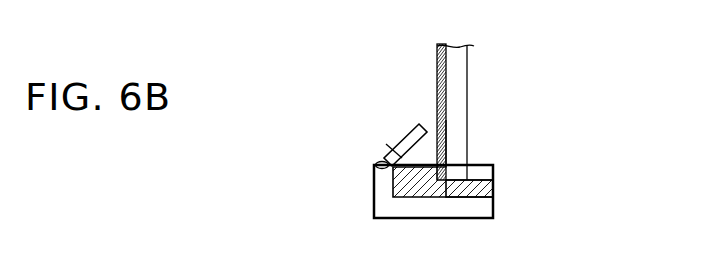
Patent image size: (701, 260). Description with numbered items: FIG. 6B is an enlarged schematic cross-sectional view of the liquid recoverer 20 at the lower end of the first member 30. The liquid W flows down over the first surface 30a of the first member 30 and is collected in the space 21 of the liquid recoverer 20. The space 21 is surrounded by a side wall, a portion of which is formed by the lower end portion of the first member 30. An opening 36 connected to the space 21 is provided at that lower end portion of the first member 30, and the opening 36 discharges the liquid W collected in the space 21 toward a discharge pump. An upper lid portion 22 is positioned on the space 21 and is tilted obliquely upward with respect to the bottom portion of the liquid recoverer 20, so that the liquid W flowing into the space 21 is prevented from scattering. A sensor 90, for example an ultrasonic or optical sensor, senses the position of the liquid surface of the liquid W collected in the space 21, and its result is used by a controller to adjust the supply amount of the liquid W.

The liquid W is at (437, 85).
The liquid recoverer 20 is at (364, 197).
The space 21 is at (403, 178).
The upper lid portion 22 is at (404, 131).
The first member 30 is at (461, 117).
The first surface 30a is at (447, 139).
The opening 36 is at (460, 187).
The sensor 90 is at (376, 161).